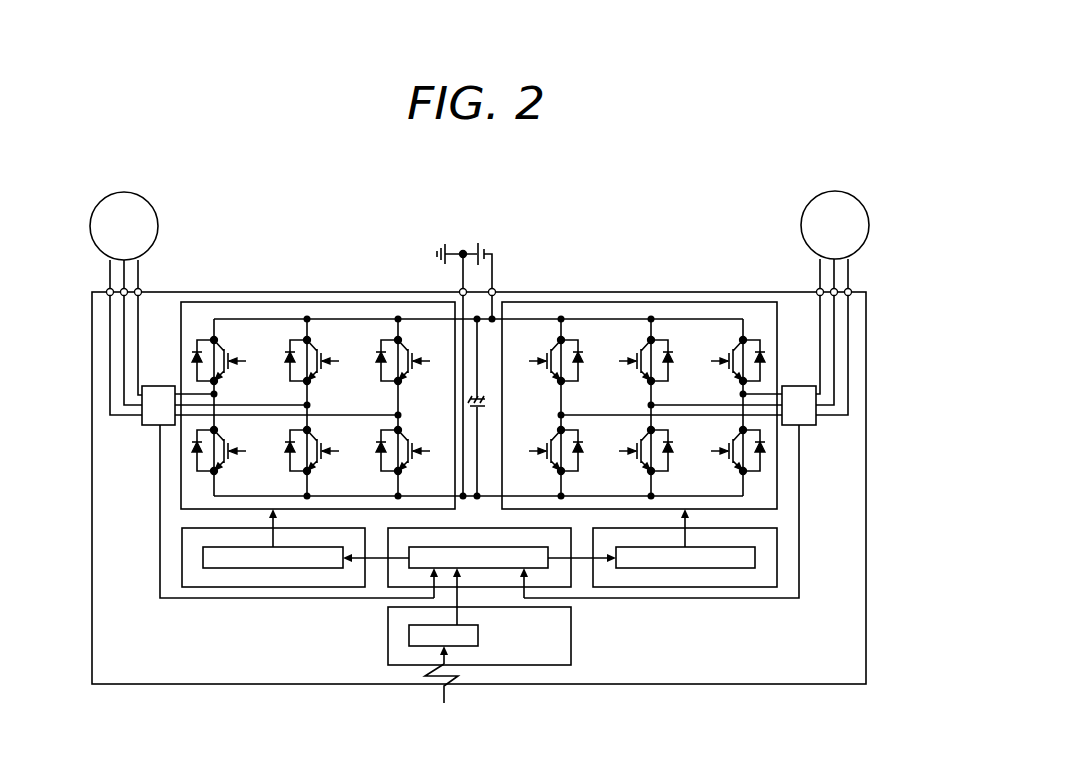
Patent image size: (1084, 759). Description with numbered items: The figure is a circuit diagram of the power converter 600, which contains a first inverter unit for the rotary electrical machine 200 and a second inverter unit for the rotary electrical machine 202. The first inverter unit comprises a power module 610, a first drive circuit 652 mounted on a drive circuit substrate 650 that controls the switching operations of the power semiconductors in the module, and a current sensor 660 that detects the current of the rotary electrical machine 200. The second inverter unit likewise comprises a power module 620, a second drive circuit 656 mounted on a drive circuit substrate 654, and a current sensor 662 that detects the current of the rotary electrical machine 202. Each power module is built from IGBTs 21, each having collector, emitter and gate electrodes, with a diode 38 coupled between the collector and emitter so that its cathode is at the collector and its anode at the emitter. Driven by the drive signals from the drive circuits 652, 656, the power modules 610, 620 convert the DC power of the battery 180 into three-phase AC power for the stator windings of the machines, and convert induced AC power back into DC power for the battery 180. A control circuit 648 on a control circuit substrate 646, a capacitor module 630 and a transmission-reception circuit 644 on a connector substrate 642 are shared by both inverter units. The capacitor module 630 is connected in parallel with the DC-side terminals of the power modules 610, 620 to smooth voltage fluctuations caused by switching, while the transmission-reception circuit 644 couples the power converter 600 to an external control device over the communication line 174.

The IGBT 21 is at (229, 352).
The diode 38 is at (197, 347).
The communication line 174 is at (444, 689).
The battery 180 is at (480, 246).
The rotary electrical machine 200 is at (150, 195).
The rotary electrical machine 202 is at (862, 195).
The power converter 600 is at (868, 320).
The power module 610 is at (293, 302).
The power module 620 is at (648, 302).
The capacitor module 630 is at (483, 397).
The connector substrate 642 is at (572, 635).
The transmission-reception circuit 644 is at (409, 633).
The control circuit substrate 646 is at (387, 578).
The control circuit 648 is at (550, 566).
The drive circuit substrate 650 is at (181, 555).
The first drive circuit 652 is at (271, 569).
The drive circuit substrate 654 is at (778, 555).
The second drive circuit 656 is at (710, 569).
The current sensor 660 is at (148, 428).
The current sensor 662 is at (810, 428).